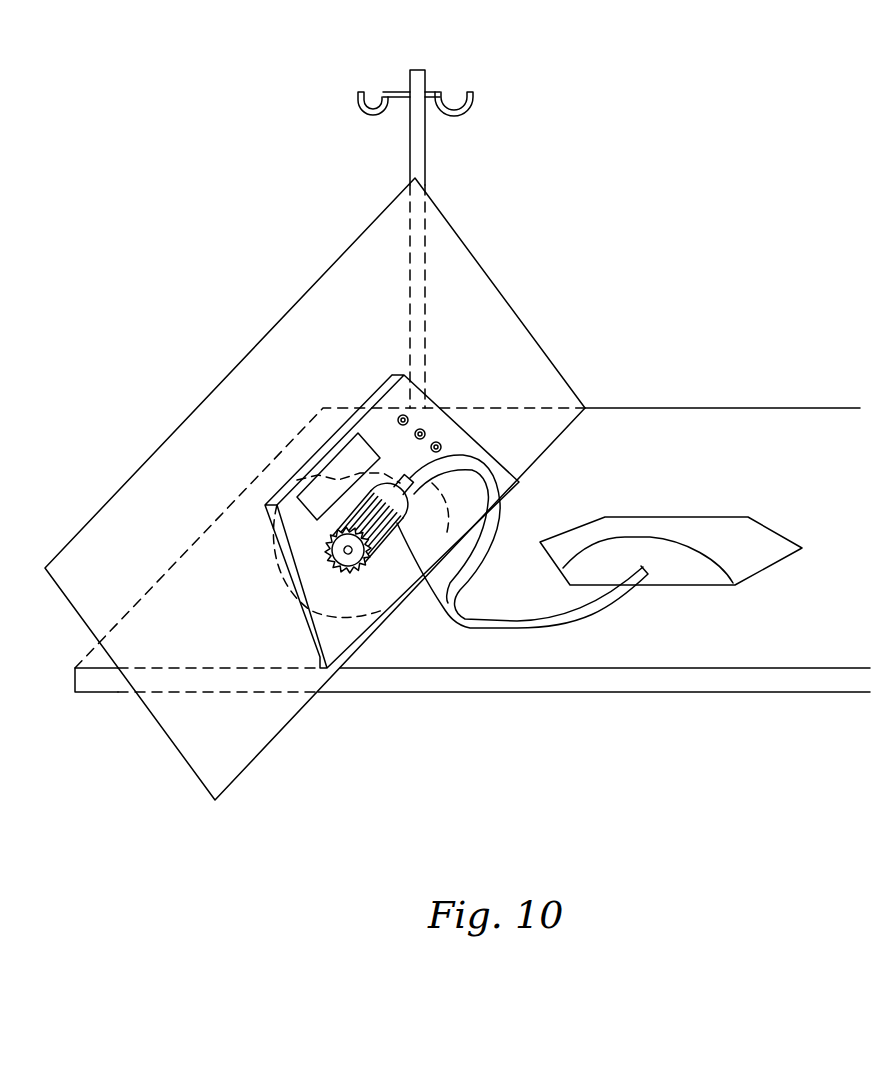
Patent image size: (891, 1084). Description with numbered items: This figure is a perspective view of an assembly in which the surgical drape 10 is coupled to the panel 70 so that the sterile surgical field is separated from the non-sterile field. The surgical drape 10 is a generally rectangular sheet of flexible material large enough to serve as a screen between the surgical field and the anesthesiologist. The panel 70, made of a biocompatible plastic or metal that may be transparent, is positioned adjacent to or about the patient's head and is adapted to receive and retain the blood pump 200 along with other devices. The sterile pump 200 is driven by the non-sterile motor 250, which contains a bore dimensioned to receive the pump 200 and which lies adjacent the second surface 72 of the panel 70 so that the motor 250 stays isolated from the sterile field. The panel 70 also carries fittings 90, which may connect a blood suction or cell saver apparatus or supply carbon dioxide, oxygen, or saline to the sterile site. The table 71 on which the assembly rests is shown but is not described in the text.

The surgical drape 10 is at (457, 441).
The panel 70 is at (327, 600).
The table 71 is at (522, 392).
The second surface 72 is at (200, 628).
The fittings 90 is at (403, 415).
The blood pump 200 is at (410, 490).
The motor 250 is at (394, 560).